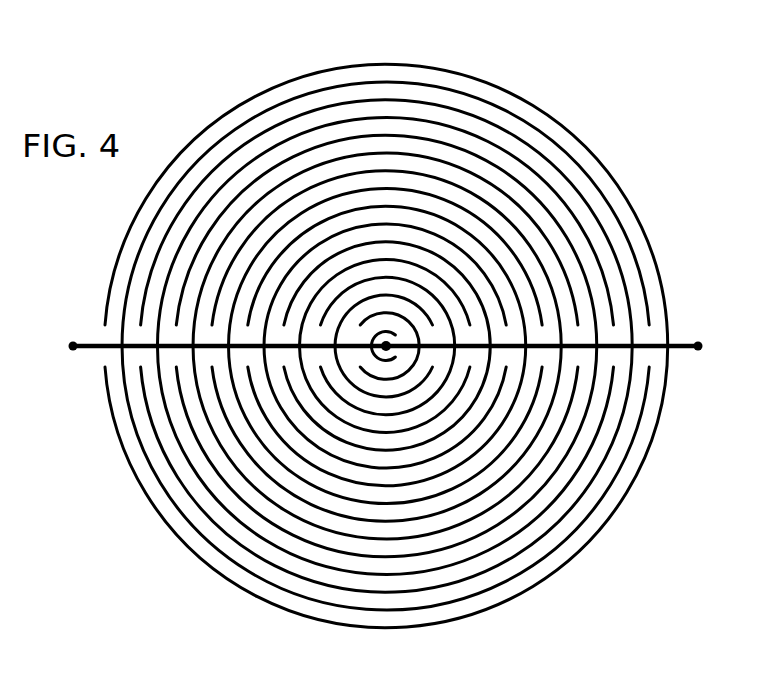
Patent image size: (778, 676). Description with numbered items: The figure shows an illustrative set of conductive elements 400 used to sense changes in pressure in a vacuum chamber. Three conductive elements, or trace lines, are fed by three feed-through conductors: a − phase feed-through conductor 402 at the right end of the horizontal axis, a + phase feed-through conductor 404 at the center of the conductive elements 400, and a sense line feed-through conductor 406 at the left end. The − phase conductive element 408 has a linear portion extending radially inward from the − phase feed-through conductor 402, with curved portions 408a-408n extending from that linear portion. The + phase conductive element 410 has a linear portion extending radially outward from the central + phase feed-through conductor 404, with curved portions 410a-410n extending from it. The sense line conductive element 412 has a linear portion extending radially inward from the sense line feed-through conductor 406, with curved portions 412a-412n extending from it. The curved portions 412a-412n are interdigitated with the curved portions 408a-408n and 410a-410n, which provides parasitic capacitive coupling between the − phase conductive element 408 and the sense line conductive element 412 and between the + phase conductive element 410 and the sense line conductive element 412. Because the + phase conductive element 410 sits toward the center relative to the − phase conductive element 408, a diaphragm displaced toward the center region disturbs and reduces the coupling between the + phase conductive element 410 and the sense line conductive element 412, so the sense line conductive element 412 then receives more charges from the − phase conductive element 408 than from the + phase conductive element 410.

The set of conductive elements 400 is at (604, 116).
The − phase feed-through conductor 402 is at (700, 340).
The + phase feed-through conductor 404 is at (386, 345).
The sense line feed-through conductor 406 is at (70, 340).
The − phase conductive element 408 is at (680, 349).
The curved portion 408a is at (651, 248).
The curved portion 408n is at (590, 293).
The + phase conductive element 410 is at (408, 345).
The curved portion 410a is at (396, 358).
The curved portion 410n is at (553, 402).
The sense line conductive element 412 is at (90, 349).
The curved portion 412a is at (137, 252).
The curved portion 412n is at (380, 358).